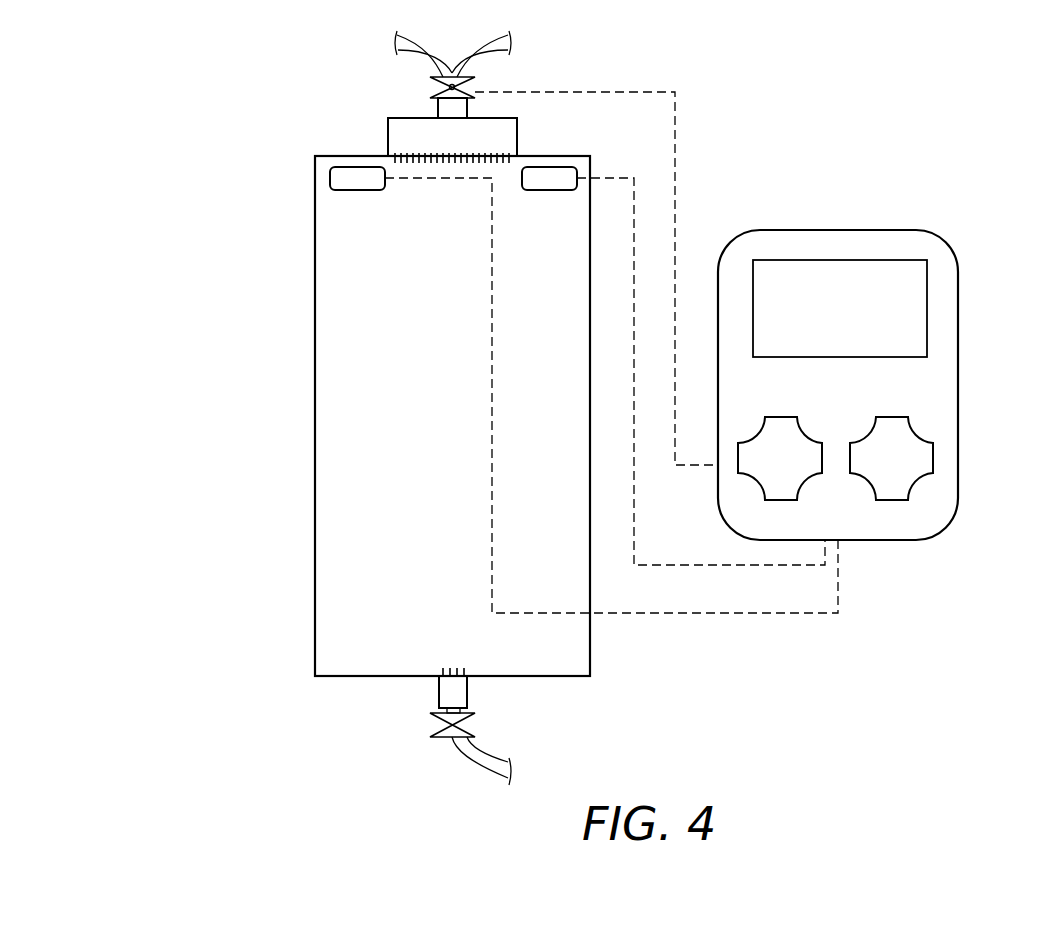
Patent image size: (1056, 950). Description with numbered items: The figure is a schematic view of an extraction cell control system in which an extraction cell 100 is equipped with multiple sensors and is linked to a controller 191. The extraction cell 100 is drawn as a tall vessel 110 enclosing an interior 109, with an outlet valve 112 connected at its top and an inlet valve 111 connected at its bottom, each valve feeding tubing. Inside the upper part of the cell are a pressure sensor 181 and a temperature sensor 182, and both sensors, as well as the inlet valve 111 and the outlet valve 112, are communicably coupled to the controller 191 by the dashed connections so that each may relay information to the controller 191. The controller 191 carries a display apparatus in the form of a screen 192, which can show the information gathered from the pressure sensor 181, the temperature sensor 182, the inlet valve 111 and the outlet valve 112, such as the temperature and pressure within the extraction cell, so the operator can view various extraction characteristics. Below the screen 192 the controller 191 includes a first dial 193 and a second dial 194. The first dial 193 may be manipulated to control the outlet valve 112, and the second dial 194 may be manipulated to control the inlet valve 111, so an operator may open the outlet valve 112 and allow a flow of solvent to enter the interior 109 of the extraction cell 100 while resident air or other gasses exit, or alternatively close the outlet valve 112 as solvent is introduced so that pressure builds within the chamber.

The extraction cell 100 is at (100, 310).
The interior 109 is at (342, 390).
The container bag 110 is at (285, 330).
The inlet valve 111 is at (437, 737).
The outlet valve 112 is at (428, 88).
The pressure sensor 181 is at (332, 183).
The temperature sensor 182 is at (540, 183).
The controller 191 is at (915, 230).
The screen 192 is at (908, 323).
The first dial 193 is at (793, 450).
The second dial 194 is at (915, 465).